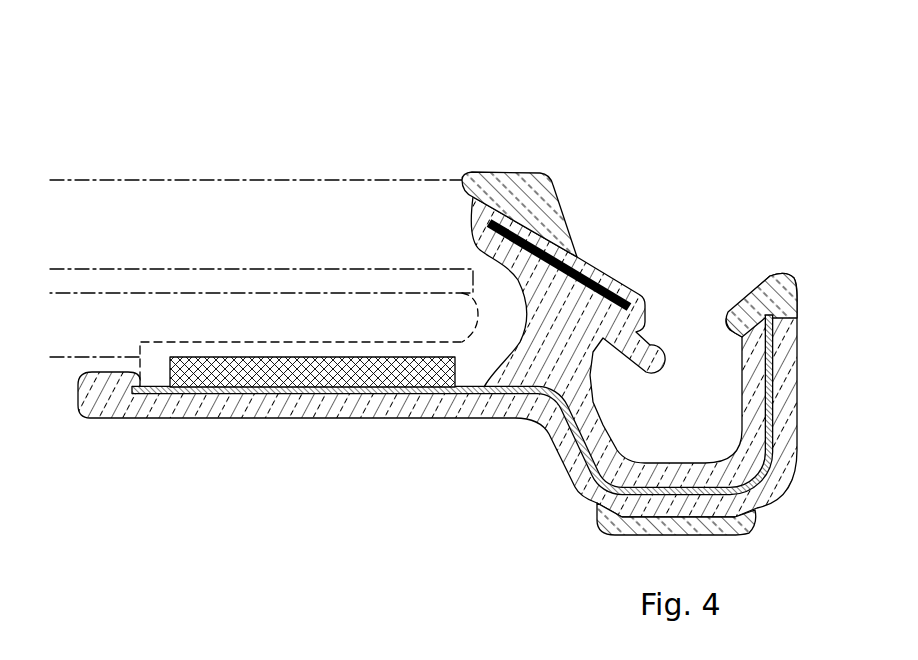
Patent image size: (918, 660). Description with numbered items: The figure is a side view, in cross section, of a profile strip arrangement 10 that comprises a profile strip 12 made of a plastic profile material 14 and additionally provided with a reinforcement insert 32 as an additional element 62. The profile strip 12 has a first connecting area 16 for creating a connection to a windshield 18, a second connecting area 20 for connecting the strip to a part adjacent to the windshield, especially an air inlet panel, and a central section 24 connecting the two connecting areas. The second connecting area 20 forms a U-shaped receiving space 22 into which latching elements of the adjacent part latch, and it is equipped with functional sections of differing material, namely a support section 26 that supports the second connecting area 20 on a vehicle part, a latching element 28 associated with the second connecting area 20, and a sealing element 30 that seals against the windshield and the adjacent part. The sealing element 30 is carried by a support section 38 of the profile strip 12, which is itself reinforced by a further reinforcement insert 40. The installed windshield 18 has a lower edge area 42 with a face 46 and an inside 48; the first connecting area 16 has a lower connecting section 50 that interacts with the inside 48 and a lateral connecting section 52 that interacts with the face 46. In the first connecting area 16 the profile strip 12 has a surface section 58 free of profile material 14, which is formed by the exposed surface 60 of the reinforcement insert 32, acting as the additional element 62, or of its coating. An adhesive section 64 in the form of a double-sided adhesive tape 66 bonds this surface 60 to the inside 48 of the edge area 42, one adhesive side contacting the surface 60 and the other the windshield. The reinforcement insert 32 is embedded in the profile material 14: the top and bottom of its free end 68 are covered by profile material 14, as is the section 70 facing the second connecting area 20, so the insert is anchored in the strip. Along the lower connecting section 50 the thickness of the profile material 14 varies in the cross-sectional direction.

The profile strip arrangement 10 is at (589, 97).
The profile strip 12 is at (446, 460).
The profile material 14 is at (272, 418).
The first connecting area 16 is at (138, 150).
The windshield 18 is at (228, 225).
The second connecting area 20 is at (701, 296).
The receiving space 22 is at (684, 452).
The central section 24 is at (515, 463).
The support section 26 is at (742, 512).
The latching element 28 is at (652, 355).
The sealing element 30 is at (518, 190).
The reinforcement insert 32 is at (404, 398).
The support section 38 is at (578, 262).
The reinforcement insert 40 is at (603, 290).
The lower edge area 42 is at (379, 142).
The face 46 is at (488, 284).
The inside 48 is at (67, 371).
The lower connecting section 50 is at (160, 462).
The lateral connecting section 52 is at (444, 212).
The surface section 58 is at (342, 339).
The surface 60 is at (153, 373).
The additional element 62 is at (338, 402).
The adhesive section 64 is at (251, 332).
The double-sided adhesive tape 66 is at (226, 398).
The free end 68 is at (126, 400).
The section 70 is at (493, 393).